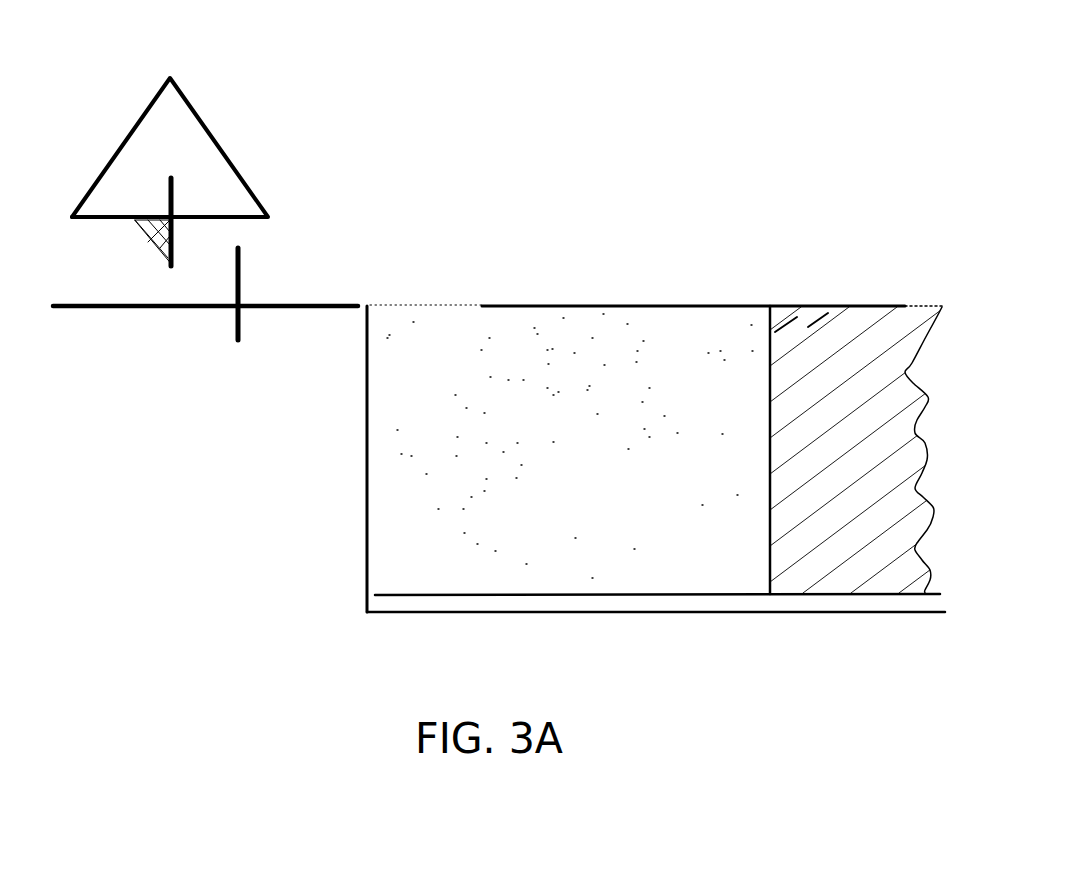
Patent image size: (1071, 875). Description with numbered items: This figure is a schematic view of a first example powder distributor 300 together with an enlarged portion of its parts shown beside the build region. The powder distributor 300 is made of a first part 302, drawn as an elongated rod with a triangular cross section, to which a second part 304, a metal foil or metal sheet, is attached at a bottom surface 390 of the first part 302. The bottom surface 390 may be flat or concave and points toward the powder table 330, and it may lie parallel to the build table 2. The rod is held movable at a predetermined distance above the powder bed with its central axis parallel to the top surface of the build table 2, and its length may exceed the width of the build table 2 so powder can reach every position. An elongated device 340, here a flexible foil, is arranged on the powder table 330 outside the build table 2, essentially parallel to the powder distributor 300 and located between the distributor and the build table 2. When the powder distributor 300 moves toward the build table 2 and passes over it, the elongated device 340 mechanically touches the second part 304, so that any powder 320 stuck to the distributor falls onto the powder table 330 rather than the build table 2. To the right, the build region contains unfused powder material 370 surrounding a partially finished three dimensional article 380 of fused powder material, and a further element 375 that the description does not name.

The powder distributor 300 is at (307, 99).
The first part 302 is at (177, 130).
The second part 304 is at (182, 193).
The elongated device 340 is at (242, 268).
The bottom surface 390 is at (107, 233).
The powder 320 is at (150, 233).
The powder table 330 is at (145, 309).
The unfused powder material 370 is at (420, 522).
The partially finished three dimensional article 380 is at (828, 340).
The base plate 375 is at (366, 580).
The build table 2 is at (685, 596).